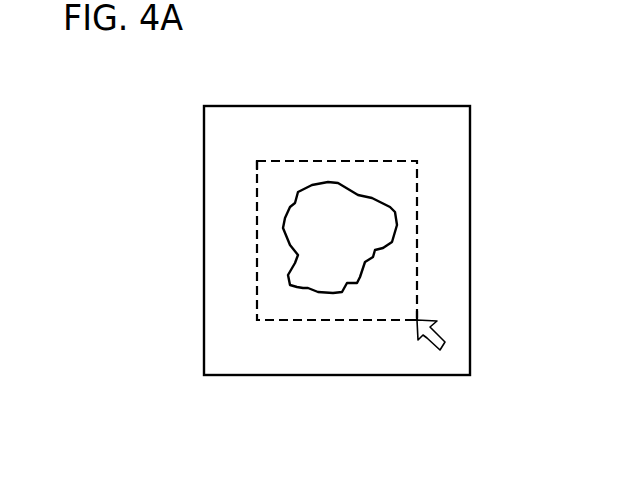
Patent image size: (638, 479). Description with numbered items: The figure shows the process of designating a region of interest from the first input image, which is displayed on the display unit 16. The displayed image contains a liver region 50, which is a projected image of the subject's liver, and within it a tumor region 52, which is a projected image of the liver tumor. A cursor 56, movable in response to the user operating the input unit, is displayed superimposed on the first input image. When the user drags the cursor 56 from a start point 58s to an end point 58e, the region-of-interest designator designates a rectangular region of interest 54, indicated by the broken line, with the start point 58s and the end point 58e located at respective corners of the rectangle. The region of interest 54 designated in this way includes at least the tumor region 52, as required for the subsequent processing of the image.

The display unit 16 is at (168, 118).
The liver region 50 is at (453, 176).
The tumor region 52 is at (328, 182).
The region of interest 54 is at (333, 322).
The start point 58s is at (257, 161).
The end point 58e is at (418, 320).
The cursor 56 is at (433, 346).